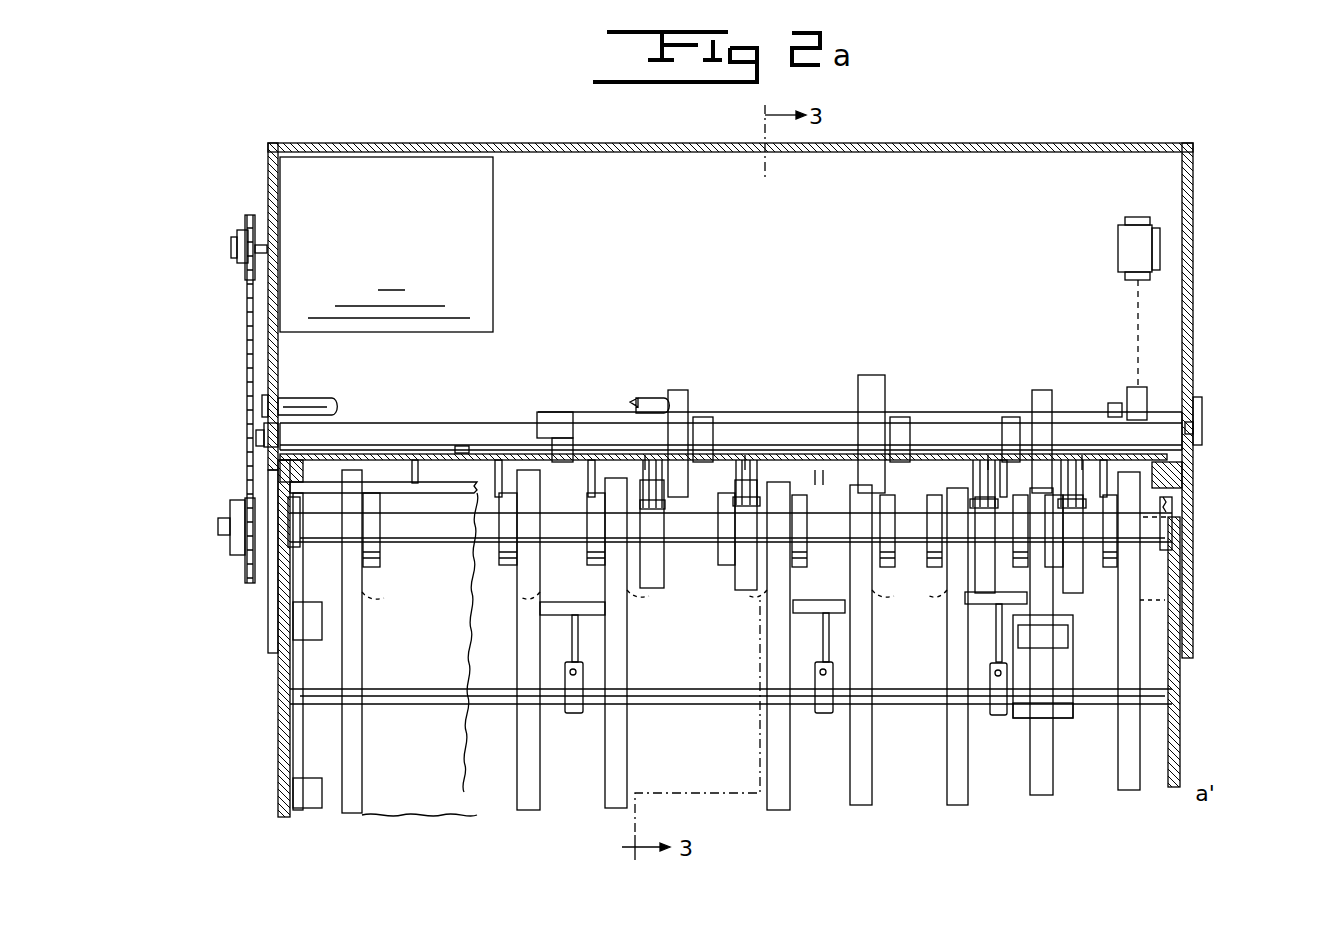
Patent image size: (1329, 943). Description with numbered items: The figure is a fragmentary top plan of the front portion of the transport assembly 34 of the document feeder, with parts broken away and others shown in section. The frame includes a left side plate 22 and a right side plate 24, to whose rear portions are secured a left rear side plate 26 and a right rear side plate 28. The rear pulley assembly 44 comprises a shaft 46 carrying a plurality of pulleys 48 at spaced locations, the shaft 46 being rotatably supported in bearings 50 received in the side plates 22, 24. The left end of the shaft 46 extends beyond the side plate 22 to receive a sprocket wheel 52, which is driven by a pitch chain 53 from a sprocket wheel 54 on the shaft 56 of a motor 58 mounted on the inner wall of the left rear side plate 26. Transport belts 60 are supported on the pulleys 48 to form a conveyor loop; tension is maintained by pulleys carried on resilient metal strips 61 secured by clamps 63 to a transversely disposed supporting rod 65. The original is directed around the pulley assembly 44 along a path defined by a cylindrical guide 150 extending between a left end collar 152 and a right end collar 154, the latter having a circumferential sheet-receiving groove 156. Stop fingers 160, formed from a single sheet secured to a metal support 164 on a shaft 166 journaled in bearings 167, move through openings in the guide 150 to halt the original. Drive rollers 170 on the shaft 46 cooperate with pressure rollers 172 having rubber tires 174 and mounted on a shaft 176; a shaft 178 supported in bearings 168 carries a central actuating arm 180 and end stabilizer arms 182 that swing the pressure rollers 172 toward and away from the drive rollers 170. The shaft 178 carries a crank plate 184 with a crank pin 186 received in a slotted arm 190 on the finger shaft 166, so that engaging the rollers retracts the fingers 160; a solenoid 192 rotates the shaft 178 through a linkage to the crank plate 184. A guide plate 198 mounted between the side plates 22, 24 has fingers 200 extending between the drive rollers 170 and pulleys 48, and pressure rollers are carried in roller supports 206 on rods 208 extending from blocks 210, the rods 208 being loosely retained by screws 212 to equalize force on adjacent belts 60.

The left side plate 22 is at (280, 753).
The right side plate 24 is at (1182, 752).
The left rear side plate 26 is at (268, 162).
The right rear side plate 28 is at (1195, 175).
The transport assembly 34 is at (196, 603).
The rear pulley assembly 44 is at (455, 500).
The shaft 46 is at (445, 542).
The pulleys 48 is at (357, 598).
The bearings 50 is at (300, 530).
The sprocket wheel 52 is at (257, 583).
The pitch chain 53 is at (256, 420).
The sprocket wheel 54 is at (247, 285).
The shaft 56 is at (231, 245).
The motor 58 is at (493, 265).
The transport belts 60 is at (362, 650).
The resilient metal strips 61 is at (1073, 650).
The clamps 63 is at (1073, 718).
The supporting rod 65 is at (685, 704).
The cylindrical guide 150 is at (355, 445).
The left end collar 152 is at (280, 457).
The right end collar 154 is at (1182, 468).
The circumferential sheet-receiving groove 156 is at (1182, 450).
The fingers 160 is at (568, 418).
The metal support 164 is at (540, 420).
The shaft 166 is at (398, 430).
The bearings 167 is at (277, 430).
The bearings 168 is at (264, 395).
The drive rollers 170 is at (650, 590).
The pressure rollers 172 is at (640, 482).
The rubber tires 174 is at (645, 458).
The shaft 176 is at (818, 485).
The shaft 178 is at (680, 408).
The central actuating arm 180 is at (878, 375).
The end stabilizer arms 182 is at (705, 415).
The crank plate 184 is at (1148, 395).
The crank pin 186 is at (1115, 403).
The arm 190 is at (1138, 387).
The solenoid 192 is at (1160, 230).
The guide plate 198 is at (303, 715).
The fingers 200 is at (458, 446).
The roller support 206 is at (565, 602).
The rod 208 is at (835, 605).
The block 210 is at (570, 713).
The screws 212 is at (575, 708).